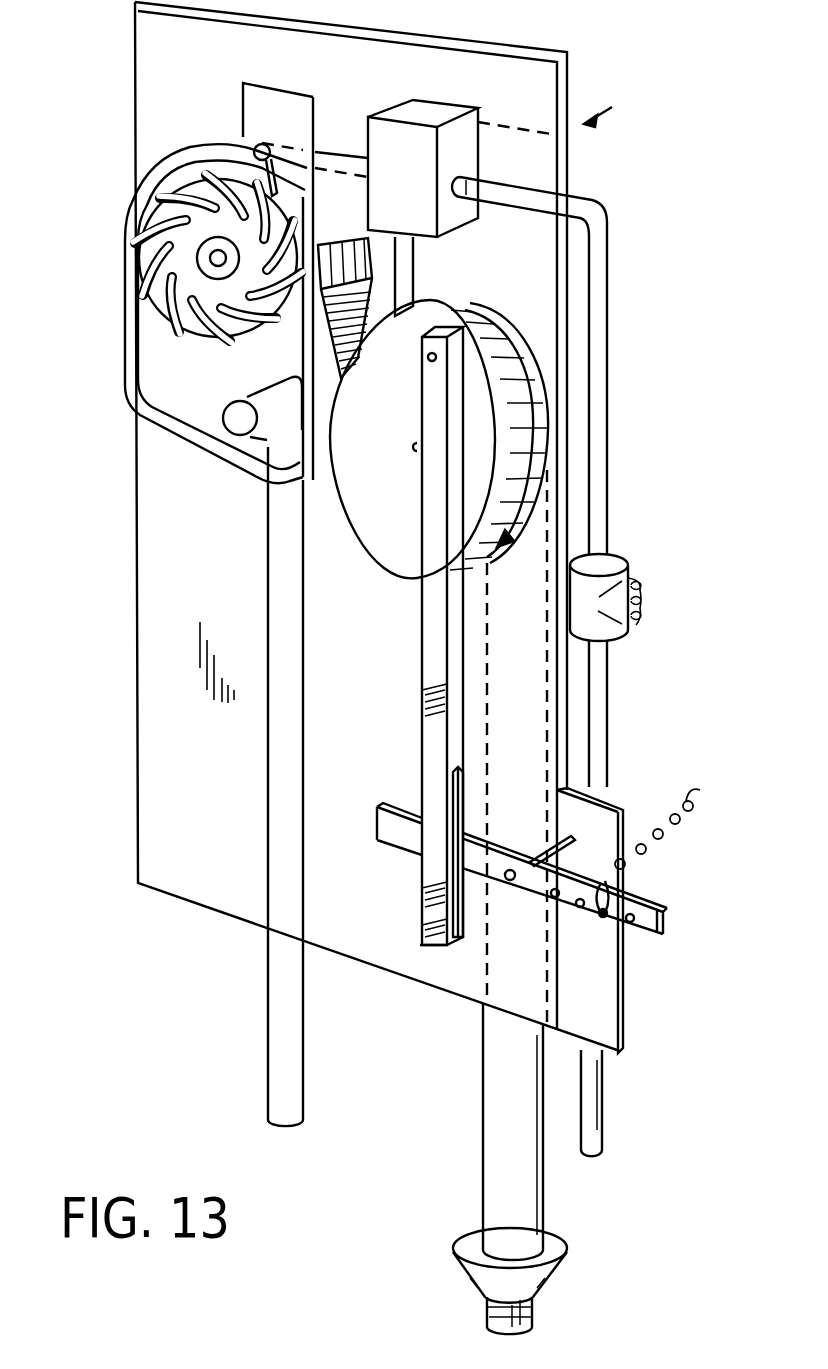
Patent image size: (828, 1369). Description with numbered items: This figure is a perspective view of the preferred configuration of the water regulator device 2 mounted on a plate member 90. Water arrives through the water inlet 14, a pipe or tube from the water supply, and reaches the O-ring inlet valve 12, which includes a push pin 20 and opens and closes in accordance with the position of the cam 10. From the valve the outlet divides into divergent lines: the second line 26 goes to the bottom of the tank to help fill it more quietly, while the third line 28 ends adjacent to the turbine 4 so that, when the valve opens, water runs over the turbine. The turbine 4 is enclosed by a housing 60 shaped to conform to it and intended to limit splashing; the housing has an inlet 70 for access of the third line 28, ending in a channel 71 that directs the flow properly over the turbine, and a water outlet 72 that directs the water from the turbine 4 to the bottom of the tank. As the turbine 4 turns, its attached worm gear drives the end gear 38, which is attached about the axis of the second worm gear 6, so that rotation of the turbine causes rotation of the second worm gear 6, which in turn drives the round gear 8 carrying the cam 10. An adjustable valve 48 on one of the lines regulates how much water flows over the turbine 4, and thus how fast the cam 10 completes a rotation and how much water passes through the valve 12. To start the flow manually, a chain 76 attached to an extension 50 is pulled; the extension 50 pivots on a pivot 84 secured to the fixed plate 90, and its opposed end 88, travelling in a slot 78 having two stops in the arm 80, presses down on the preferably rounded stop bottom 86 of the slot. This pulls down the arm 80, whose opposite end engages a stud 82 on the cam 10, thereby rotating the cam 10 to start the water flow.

The water regulator device 2 is at (608, 105).
The turbine 4 is at (177, 277).
The second worm gear 6 is at (290, 288).
The round gear 8 is at (500, 548).
The cam 10 is at (487, 423).
The O-ring inlet valve 12 is at (407, 110).
The water inlet 14 is at (500, 155).
The push pin 20 is at (407, 258).
The second line 26 is at (602, 268).
The third line 28 is at (343, 160).
The end gear 38 is at (332, 253).
The adjustable valve 48 is at (640, 612).
The extension 50 is at (640, 903).
The housing 60 is at (122, 383).
The inlet 70 is at (247, 150).
The channel 71 is at (233, 153).
The water outlet 72 is at (228, 433).
The chain 76 is at (684, 800).
The slot 78 is at (455, 813).
The arm 80 is at (422, 617).
The stud 82 is at (450, 337).
The pivot 84 is at (517, 881).
The stop bottom 86 is at (453, 940).
The end 88 is at (383, 830).
The plate member 90 is at (148, 77).